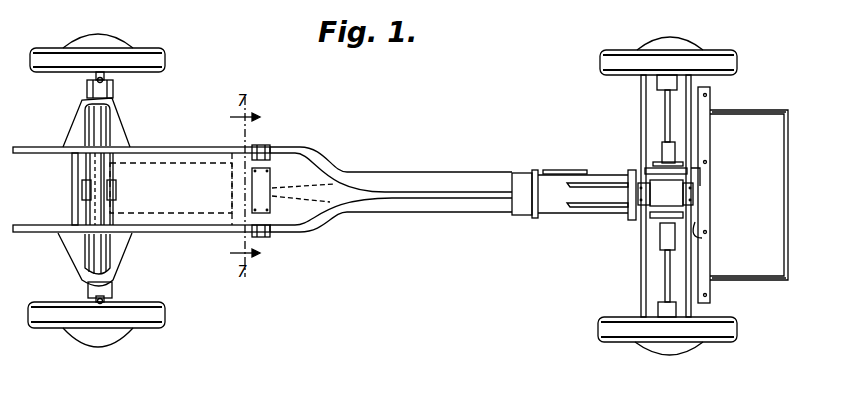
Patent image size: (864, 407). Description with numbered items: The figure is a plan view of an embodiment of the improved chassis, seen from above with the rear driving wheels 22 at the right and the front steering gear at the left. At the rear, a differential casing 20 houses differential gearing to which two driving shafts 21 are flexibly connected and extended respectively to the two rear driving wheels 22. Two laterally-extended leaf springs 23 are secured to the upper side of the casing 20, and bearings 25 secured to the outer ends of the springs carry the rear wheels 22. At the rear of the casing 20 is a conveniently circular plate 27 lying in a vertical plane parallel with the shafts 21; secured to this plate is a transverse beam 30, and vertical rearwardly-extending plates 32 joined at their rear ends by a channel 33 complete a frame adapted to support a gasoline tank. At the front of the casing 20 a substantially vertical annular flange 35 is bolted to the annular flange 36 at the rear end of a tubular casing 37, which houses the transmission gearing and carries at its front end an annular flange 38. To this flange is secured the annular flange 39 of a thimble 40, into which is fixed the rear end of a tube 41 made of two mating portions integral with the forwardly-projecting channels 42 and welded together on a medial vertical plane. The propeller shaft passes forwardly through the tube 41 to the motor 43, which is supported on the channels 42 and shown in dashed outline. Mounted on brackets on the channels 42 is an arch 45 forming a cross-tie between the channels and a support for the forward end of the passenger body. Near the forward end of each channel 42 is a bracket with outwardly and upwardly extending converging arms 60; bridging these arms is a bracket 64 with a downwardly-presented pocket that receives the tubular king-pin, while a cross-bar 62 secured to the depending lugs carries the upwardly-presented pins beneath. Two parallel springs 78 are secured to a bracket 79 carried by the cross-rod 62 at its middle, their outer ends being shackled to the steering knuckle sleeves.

The differential casing 20 is at (665, 193).
The driving shafts 21 is at (665, 116).
The rear driving wheels 22 is at (716, 58).
The leaf springs 23 is at (641, 147).
The bearings 25 is at (660, 82).
The plate 27 is at (703, 237).
The transverse beam 30 is at (710, 184).
The vertical rearwardly-extending plates 32 is at (756, 111).
The channel 33 is at (785, 213).
The annular flange 35 is at (660, 243).
The annular flange 36 is at (630, 221).
The tubular casing 37 is at (571, 215).
The annular flange 38 is at (536, 220).
The annular flange 39 is at (533, 220).
The thimble 40 is at (526, 174).
The tube 41 is at (455, 178).
The forwardly-projecting channels 42 is at (189, 151).
The motor 43 is at (150, 163).
The arch 45 is at (272, 176).
The converging arms 60 is at (78, 123).
The cross-bar 62 is at (101, 262).
The bracket 64 is at (108, 74).
The parallel springs 78 is at (87, 90).
The bracket 79 is at (88, 189).